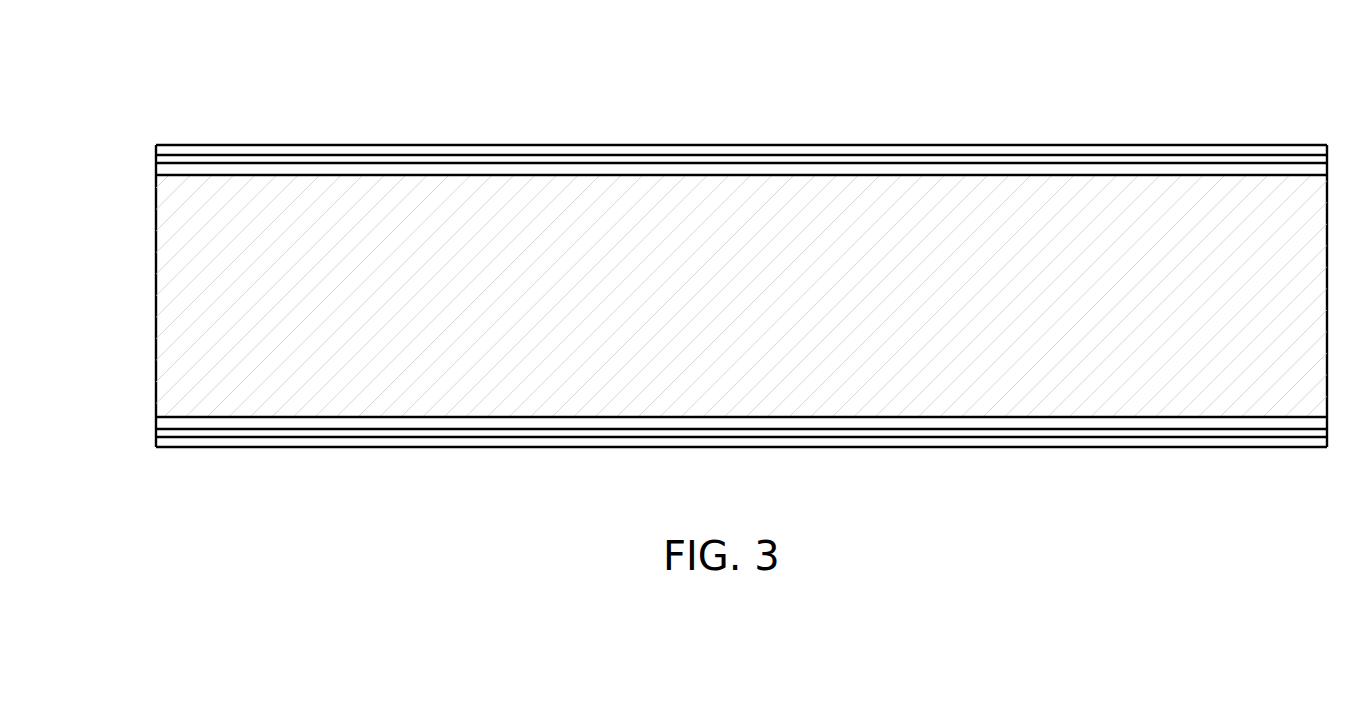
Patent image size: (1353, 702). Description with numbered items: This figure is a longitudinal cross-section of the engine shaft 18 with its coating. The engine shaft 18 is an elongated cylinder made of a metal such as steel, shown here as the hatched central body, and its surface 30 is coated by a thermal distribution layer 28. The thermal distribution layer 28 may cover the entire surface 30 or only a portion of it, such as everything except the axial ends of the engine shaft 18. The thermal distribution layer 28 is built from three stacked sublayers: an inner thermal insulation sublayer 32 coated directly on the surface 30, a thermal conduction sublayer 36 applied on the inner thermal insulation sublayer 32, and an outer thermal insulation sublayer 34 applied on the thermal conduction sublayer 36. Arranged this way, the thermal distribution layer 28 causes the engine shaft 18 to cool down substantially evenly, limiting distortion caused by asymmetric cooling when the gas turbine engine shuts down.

The thermal distribution layer 28 is at (157, 143).
The engine shaft 18 is at (485, 207).
The thermal conduction sublayer 36 is at (660, 148).
The outer thermal insulation sublayer 34 is at (793, 143).
The inner thermal insulation sublayer 32 is at (913, 163).
The surface 30 is at (702, 420).